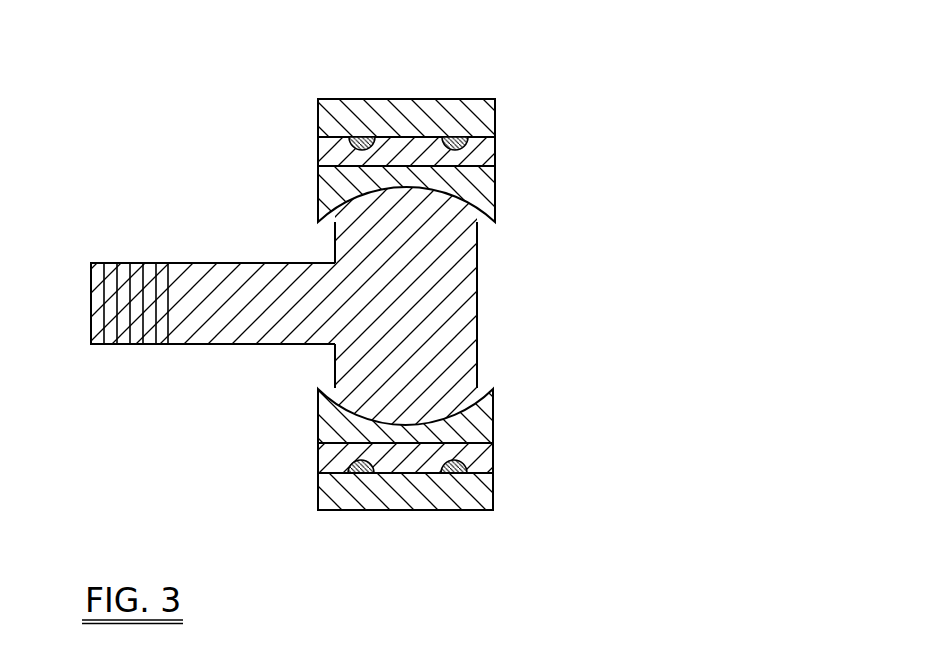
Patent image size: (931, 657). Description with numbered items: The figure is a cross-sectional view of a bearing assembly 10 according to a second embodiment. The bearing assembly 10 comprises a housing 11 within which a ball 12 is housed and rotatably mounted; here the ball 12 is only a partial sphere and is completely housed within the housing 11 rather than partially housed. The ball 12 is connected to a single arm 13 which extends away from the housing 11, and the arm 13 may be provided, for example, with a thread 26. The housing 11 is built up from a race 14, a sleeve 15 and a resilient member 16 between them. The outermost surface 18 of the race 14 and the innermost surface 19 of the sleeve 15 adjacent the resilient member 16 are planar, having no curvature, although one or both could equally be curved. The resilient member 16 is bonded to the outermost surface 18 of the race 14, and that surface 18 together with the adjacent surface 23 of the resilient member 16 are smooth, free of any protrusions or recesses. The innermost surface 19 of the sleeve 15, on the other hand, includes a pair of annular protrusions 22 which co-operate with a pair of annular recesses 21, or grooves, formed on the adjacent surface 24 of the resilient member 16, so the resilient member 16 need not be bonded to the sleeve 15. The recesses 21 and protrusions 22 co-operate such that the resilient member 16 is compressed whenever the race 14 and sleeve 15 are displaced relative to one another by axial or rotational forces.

The bearing assembly 10 is at (574, 72).
The housing 11 is at (507, 501).
The ball 12 is at (423, 352).
The arm 13 is at (205, 287).
The race 14 is at (333, 427).
The sleeve 15 is at (333, 490).
The resilient member 16 is at (483, 460).
The outermost surface of the race 18 is at (494, 190).
The innermost surface of the sleeve 19 is at (318, 113).
The annular recesses 21 is at (318, 193).
The annular protrusions 22 is at (458, 137).
The surface of the resilient member adjacent the race 23 is at (493, 162).
The surface of the resilient member adjacent the sleeve 24 is at (318, 147).
The thread 26 is at (127, 338).